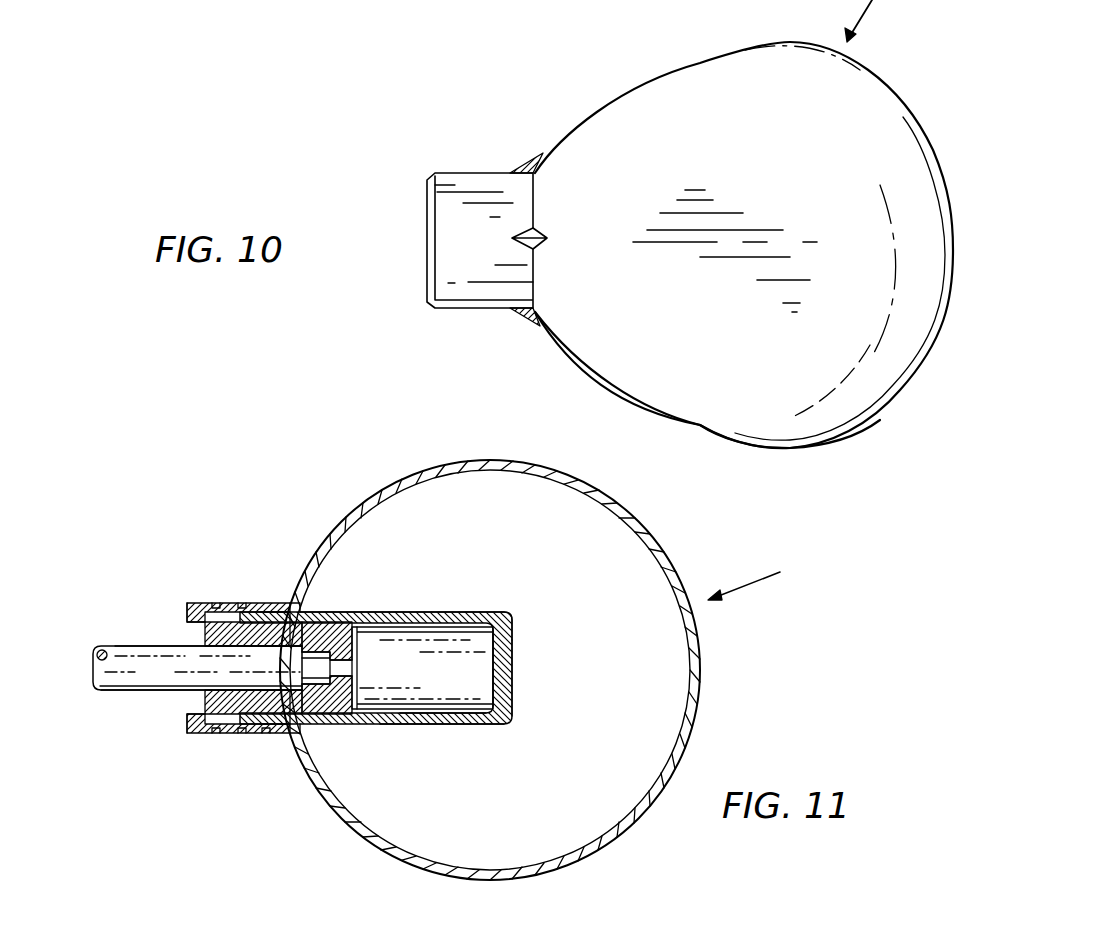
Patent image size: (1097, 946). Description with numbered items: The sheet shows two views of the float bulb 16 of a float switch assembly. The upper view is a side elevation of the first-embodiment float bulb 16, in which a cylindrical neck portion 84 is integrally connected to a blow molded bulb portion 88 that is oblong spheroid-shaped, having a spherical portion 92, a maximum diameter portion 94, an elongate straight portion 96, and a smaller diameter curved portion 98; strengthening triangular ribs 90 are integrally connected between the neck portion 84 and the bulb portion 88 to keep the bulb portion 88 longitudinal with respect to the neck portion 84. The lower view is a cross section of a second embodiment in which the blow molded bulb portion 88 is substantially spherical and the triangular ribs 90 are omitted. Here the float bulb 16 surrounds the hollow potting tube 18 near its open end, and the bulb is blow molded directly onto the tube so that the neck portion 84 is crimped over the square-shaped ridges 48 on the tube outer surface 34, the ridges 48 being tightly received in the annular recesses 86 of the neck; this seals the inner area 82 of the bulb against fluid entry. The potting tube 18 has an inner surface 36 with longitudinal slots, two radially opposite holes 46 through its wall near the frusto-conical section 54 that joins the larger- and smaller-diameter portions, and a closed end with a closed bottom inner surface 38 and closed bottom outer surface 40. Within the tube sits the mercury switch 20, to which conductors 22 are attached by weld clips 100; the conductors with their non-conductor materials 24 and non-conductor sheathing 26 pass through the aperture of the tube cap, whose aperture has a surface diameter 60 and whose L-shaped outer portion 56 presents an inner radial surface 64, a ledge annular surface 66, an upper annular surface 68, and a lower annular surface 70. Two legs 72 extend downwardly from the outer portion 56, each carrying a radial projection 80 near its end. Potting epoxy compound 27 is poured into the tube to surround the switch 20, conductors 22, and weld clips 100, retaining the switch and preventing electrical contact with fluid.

In FIG. 11, the float bulb 16 is at (762, 577).
In FIG. 11, the potting tube 18 is at (454, 610).
In FIG. 11, the mercury switch 20 is at (495, 612).
In FIG. 11, the conductors 22 is at (354, 648).
In FIG. 11, the non-conductor materials 24 is at (296, 602).
In FIG. 11, the non-conductor sheathing 26 is at (120, 660).
In FIG. 11, the potting epoxy compound 27 is at (300, 648).
In FIG. 11, the outer surface 34 is at (433, 724).
In FIG. 11, the inner surface 36 is at (450, 706).
In FIG. 11, the closed bottom inner surface 38 is at (505, 651).
In FIG. 11, the closed bottom outer surface 40 is at (511, 683).
In FIG. 11, the holes 46 is at (343, 612).
In FIG. 11, the ridges 48 is at (201, 603).
In FIG. 11, the frusto-conical section 54 is at (377, 610).
In FIG. 11, the outer portion 56 is at (190, 617).
In FIG. 11, the surface diameter 60 is at (215, 647).
In FIG. 11, the inner radial surface 64 is at (208, 693).
In FIG. 11, the ledge annular surface 66 is at (197, 690).
In FIG. 11, the upper annular surface 68 is at (200, 735).
In FIG. 11, the lower annular surface 70 is at (235, 683).
In FIG. 11, the legs 72 is at (280, 602).
In FIG. 11, the radial projection 80 is at (323, 617).
In FIG. 11, the inner area 82 is at (641, 669).
In FIG. 10, the neck portion 84 is at (457, 167).
In FIG. 11, the neck portion 84 is at (257, 602).
In FIG. 11, the annular recesses 86 is at (224, 737).
In FIG. 10, the blow molded bulb portion 88 is at (682, 87).
In FIG. 11, the blow molded bulb portion 88 is at (425, 470).
In FIG. 10, the strengthening triangular ribs 90 is at (525, 163).
In FIG. 10, the spherical portion 92 is at (900, 102).
In FIG. 10, the maximum diameter portion 94 is at (813, 448).
In FIG. 10, the elongate straight portion 96 is at (700, 440).
In FIG. 10, the smaller diameter curved portion 98 is at (560, 357).
In FIG. 11, the weld clips 100 is at (373, 610).